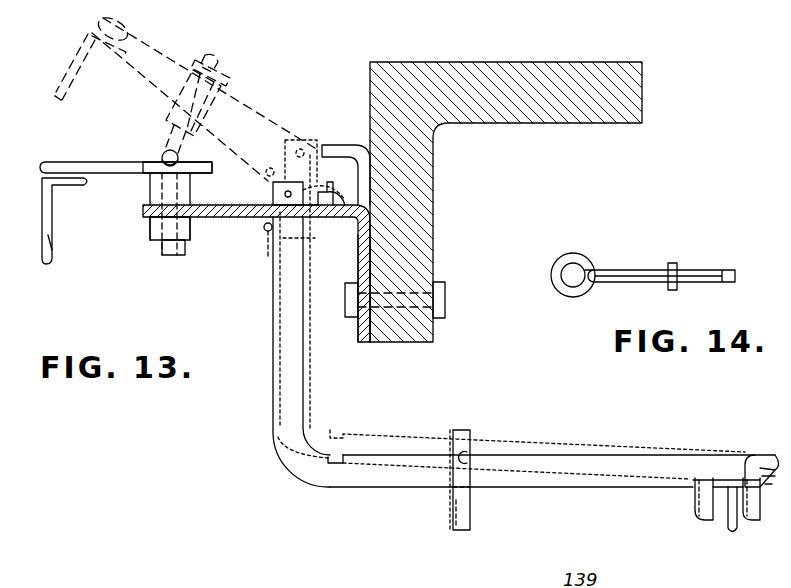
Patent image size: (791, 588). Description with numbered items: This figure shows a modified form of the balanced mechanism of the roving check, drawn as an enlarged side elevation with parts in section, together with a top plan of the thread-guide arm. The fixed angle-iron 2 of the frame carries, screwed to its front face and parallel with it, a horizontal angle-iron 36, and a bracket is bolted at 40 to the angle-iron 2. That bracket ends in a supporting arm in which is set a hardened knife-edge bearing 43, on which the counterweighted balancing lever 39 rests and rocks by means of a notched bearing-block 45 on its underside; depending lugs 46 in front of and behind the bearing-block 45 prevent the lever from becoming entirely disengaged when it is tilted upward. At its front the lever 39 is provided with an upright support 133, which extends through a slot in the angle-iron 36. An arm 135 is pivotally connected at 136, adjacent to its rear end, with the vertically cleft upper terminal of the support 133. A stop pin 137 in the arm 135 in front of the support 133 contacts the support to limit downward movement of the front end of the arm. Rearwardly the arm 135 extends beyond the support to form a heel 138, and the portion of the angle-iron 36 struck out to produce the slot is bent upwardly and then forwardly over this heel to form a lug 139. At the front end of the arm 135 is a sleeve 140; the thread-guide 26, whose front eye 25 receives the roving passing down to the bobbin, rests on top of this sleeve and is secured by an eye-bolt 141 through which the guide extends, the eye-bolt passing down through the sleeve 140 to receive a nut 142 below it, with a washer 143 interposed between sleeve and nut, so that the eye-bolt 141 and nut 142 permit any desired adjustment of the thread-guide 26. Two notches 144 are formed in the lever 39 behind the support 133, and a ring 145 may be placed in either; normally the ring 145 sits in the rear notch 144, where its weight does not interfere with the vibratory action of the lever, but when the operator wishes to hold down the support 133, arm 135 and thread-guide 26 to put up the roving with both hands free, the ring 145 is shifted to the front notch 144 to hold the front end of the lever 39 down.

In FIG. 13, the angle-iron 2 is at (582, 118).
In FIG. 13, the eye 25 is at (80, 185).
In FIG. 13, the thread-guide 26 is at (103, 163).
In FIG. 13, the horizontal angle-iron 36 is at (361, 262).
In FIG. 13, the balancing lever 39 is at (603, 488).
In FIG. 13, the bolt 40 is at (447, 300).
In FIG. 13, the knife-edge bearing 43 is at (729, 526).
In FIG. 13, the end hook 45 is at (741, 476).
In FIG. 13, the depending lugs 46 is at (708, 518).
In FIG. 13, the upright support 133 is at (282, 345).
In FIG. 13, the arm 135 is at (226, 228).
In FIG. 14, the arm 135 is at (609, 277).
In FIG. 13, the pivot 136 is at (286, 191).
In FIG. 13, the stop pin 137 is at (267, 232).
In FIG. 14, the stop pin 137 is at (679, 268).
In FIG. 13, the heel 138 is at (326, 202).
In FIG. 13, the lug 139 is at (336, 145).
In FIG. 13, the sleeve 140 is at (157, 193).
In FIG. 14, the sleeve 140 is at (568, 296).
In FIG. 13, the eye-bolt 141 is at (162, 158).
In FIG. 13, the nut 142 is at (160, 252).
In FIG. 13, the washer 143 is at (150, 238).
In FIG. 13, the notches 144 is at (343, 464).
In FIG. 13, the ring 145 is at (471, 528).